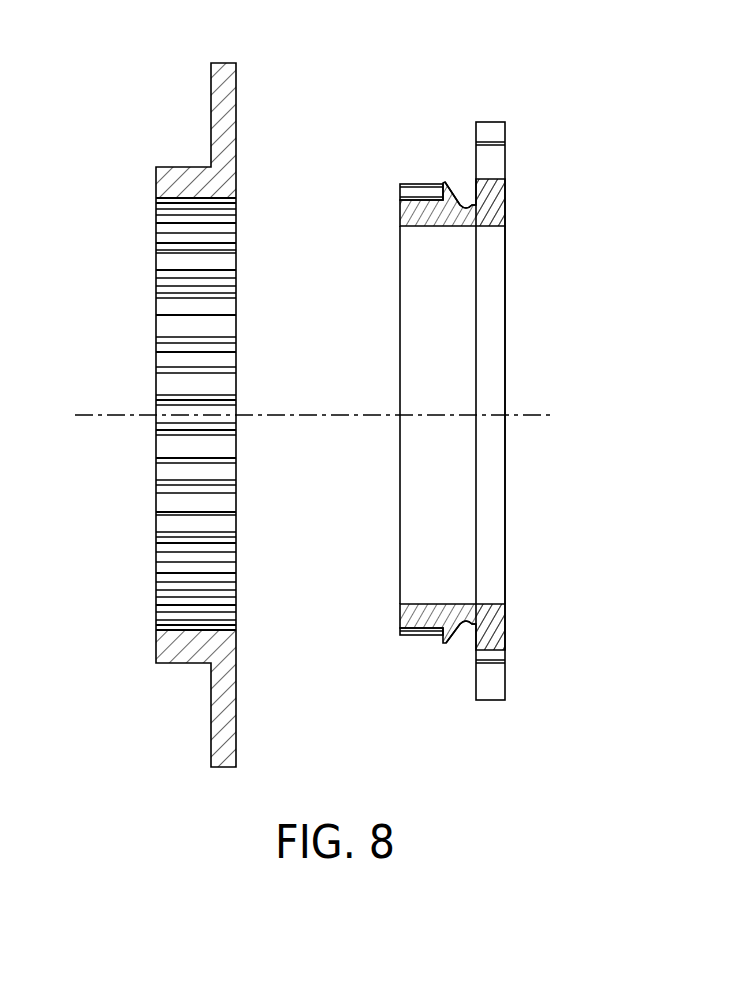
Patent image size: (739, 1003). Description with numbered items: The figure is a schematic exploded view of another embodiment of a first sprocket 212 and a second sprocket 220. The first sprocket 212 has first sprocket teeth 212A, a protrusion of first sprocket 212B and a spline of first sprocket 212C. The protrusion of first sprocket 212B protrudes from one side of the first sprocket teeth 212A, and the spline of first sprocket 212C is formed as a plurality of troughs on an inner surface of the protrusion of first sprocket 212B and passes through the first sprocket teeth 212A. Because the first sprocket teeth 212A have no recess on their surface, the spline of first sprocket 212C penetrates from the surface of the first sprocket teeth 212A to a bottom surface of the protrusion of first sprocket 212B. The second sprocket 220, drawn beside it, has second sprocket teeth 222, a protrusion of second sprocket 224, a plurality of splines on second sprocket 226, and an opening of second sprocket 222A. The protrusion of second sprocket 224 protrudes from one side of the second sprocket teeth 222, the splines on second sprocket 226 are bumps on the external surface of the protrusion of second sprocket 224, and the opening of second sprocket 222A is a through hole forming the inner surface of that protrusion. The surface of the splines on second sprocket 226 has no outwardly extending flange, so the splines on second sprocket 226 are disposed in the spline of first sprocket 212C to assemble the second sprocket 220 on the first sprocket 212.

The first sprocket 212 is at (261, 69).
The first sprocket teeth 212A is at (236, 116).
The protrusion of first sprocket 212B is at (163, 180).
The spline of first sprocket 212C is at (170, 306).
The second sprocket 220 is at (513, 97).
The second sprocket teeth 222 is at (490, 133).
The opening of second sprocket 222A is at (424, 321).
The protrusion of second sprocket 224 is at (466, 209).
The splines on second sprocket 226 is at (418, 190).